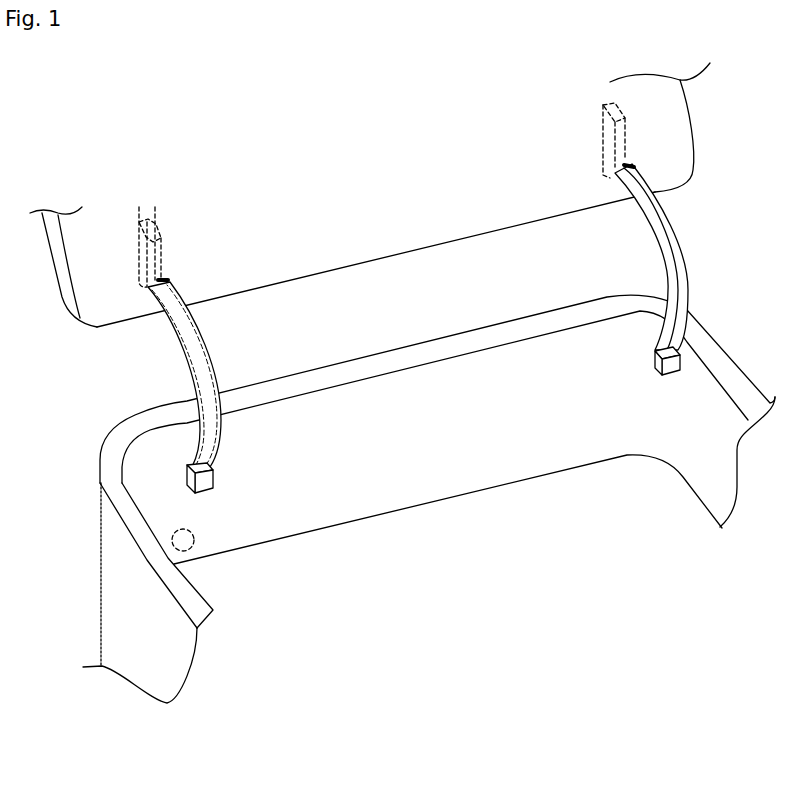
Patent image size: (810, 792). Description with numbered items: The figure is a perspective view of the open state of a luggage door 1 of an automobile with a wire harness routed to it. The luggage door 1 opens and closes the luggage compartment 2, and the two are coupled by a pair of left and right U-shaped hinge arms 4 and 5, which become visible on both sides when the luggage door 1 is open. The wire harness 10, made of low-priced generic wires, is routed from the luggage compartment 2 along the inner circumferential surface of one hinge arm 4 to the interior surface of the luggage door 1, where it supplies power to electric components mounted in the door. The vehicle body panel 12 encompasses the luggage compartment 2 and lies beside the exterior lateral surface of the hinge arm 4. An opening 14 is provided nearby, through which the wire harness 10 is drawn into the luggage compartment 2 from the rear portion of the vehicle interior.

The luggage door 1 is at (93, 248).
The luggage compartment 2 is at (460, 457).
The hinge arm 4 is at (212, 348).
The hinge arm 5 is at (680, 238).
The wire harness 10 is at (170, 320).
The vehicle body panel 12 is at (123, 512).
The opening 14 is at (197, 545).